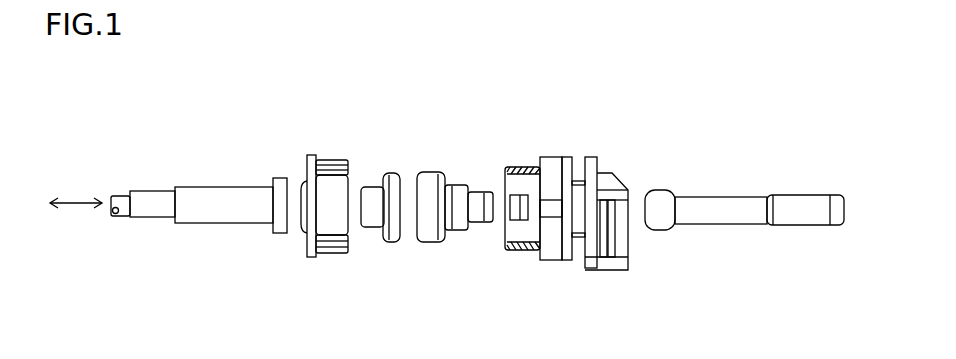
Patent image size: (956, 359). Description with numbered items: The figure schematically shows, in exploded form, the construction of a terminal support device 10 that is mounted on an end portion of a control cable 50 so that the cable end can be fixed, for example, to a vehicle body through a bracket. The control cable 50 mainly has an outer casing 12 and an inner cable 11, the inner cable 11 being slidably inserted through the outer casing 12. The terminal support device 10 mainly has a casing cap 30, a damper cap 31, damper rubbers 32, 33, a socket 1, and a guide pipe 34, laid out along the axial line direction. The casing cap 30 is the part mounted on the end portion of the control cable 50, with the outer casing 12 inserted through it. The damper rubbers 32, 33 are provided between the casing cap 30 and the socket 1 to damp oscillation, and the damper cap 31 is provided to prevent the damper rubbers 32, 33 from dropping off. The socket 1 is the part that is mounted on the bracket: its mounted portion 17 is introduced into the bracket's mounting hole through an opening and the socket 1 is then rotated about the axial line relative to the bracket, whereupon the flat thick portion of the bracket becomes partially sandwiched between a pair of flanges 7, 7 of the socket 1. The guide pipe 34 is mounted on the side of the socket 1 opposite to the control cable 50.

The socket 1 is at (524, 140).
The flanges 7 is at (566, 157).
The terminal support device 10 is at (248, 106).
The inner cable 11 is at (123, 216).
The outer casing 12 is at (158, 213).
The mounted portion 17 is at (579, 238).
The casing cap 30 is at (222, 214).
The damper cap 31 is at (327, 258).
The damper rubber 32 is at (375, 220).
The damper rubber 33 is at (457, 220).
The guide pipe 34 is at (719, 214).
The control cable 50 is at (127, 181).